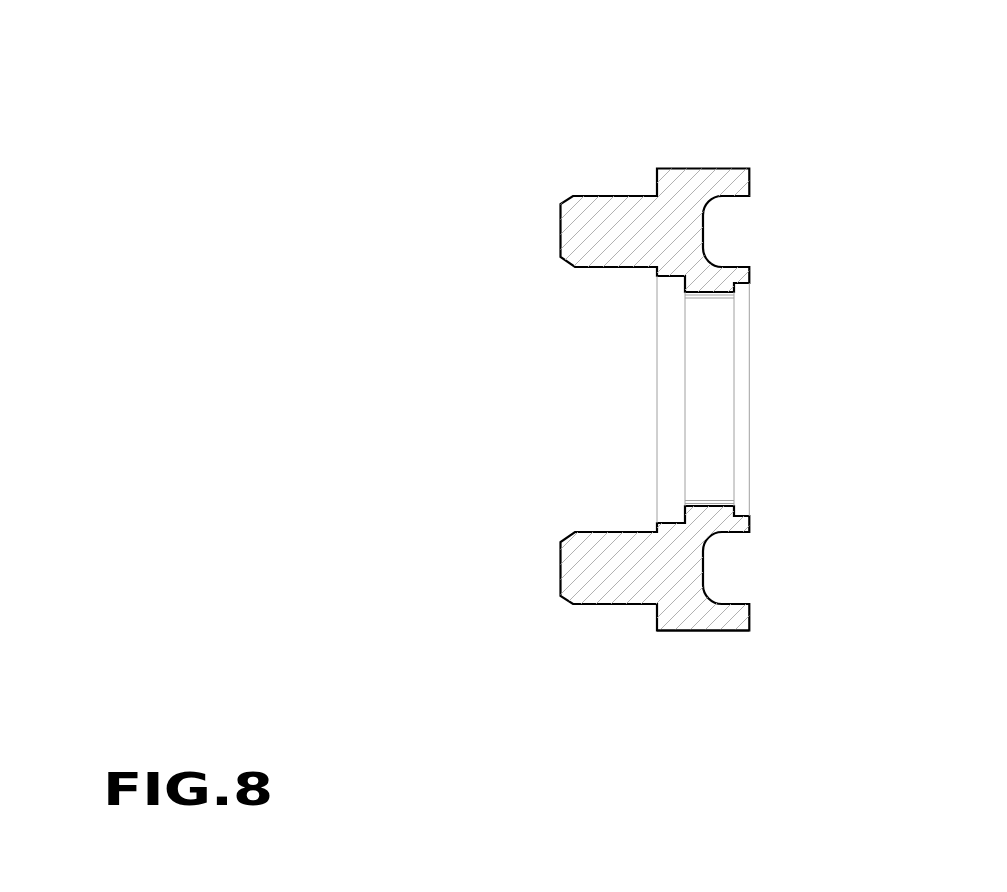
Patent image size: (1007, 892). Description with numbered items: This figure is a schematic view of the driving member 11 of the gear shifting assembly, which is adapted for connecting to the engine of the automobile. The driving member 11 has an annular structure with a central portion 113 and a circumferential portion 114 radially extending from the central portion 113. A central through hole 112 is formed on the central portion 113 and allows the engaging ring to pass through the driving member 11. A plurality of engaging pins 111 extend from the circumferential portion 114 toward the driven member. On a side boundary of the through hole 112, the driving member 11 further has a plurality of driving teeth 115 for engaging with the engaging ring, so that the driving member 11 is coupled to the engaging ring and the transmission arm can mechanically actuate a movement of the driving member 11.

The driving member 11 is at (681, 187).
The engaging pins 111 is at (598, 213).
The central through hole 112 is at (749, 343).
The central portion 113 is at (715, 513).
The circumferential portion 114 is at (705, 633).
The driving teeth 115 is at (705, 298).